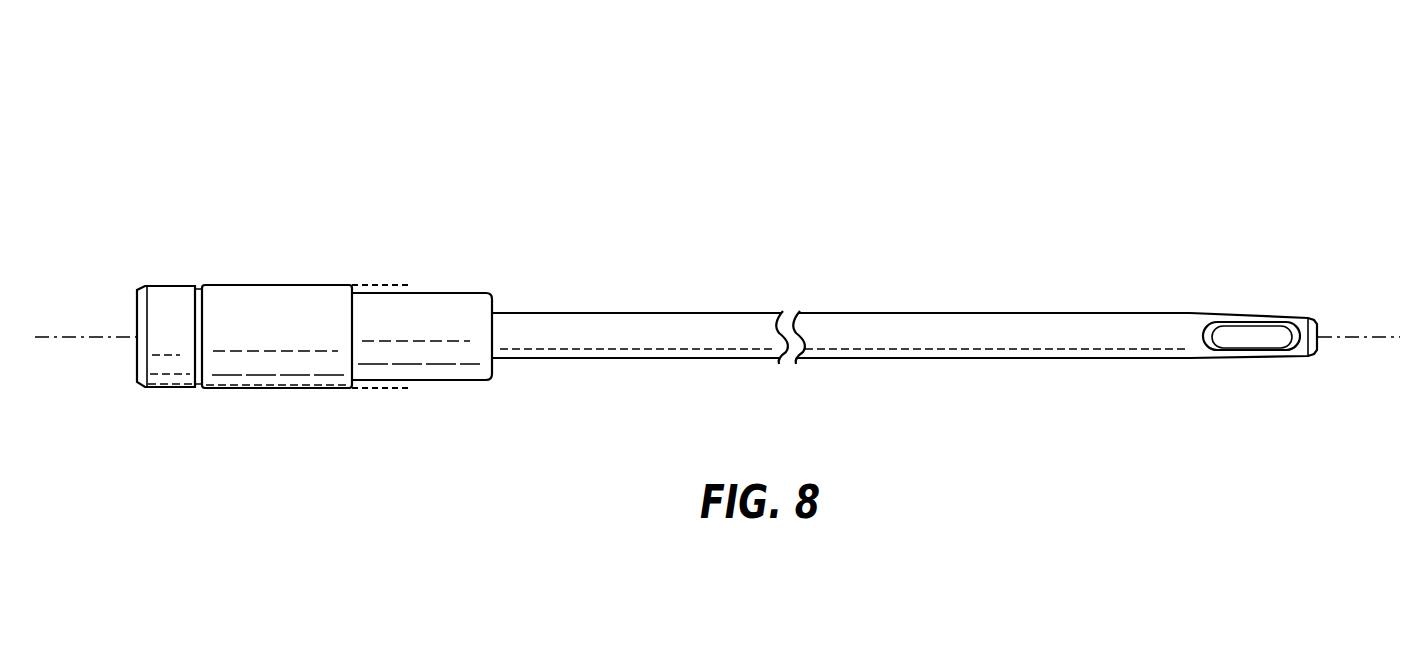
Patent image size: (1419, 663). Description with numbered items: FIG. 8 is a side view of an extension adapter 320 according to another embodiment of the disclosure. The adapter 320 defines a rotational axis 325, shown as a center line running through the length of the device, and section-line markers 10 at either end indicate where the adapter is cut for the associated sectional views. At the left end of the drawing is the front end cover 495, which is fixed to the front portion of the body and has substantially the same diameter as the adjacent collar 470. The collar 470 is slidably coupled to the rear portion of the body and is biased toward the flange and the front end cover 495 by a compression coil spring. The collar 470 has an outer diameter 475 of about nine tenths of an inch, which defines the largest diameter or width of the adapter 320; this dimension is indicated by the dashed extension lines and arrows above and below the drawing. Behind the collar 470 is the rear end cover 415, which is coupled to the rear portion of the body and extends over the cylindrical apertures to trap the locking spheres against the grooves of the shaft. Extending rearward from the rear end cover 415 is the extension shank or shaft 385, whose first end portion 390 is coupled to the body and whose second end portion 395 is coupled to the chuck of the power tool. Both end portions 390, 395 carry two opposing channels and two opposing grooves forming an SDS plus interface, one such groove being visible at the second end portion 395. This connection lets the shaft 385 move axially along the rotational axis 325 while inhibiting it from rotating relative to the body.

The adapter 320 is at (866, 130).
The rotational axis 325 is at (78, 340).
The power tool 10 is at (117, 326).
The front end cover 495 is at (173, 368).
The collar 470 is at (283, 296).
The outer diameter 475 is at (389, 427).
The rear end cover 415 is at (457, 370).
The first end portion 390 is at (520, 287).
The extension shank or shaft 385 is at (903, 322).
The second end portion 395 is at (1232, 268).